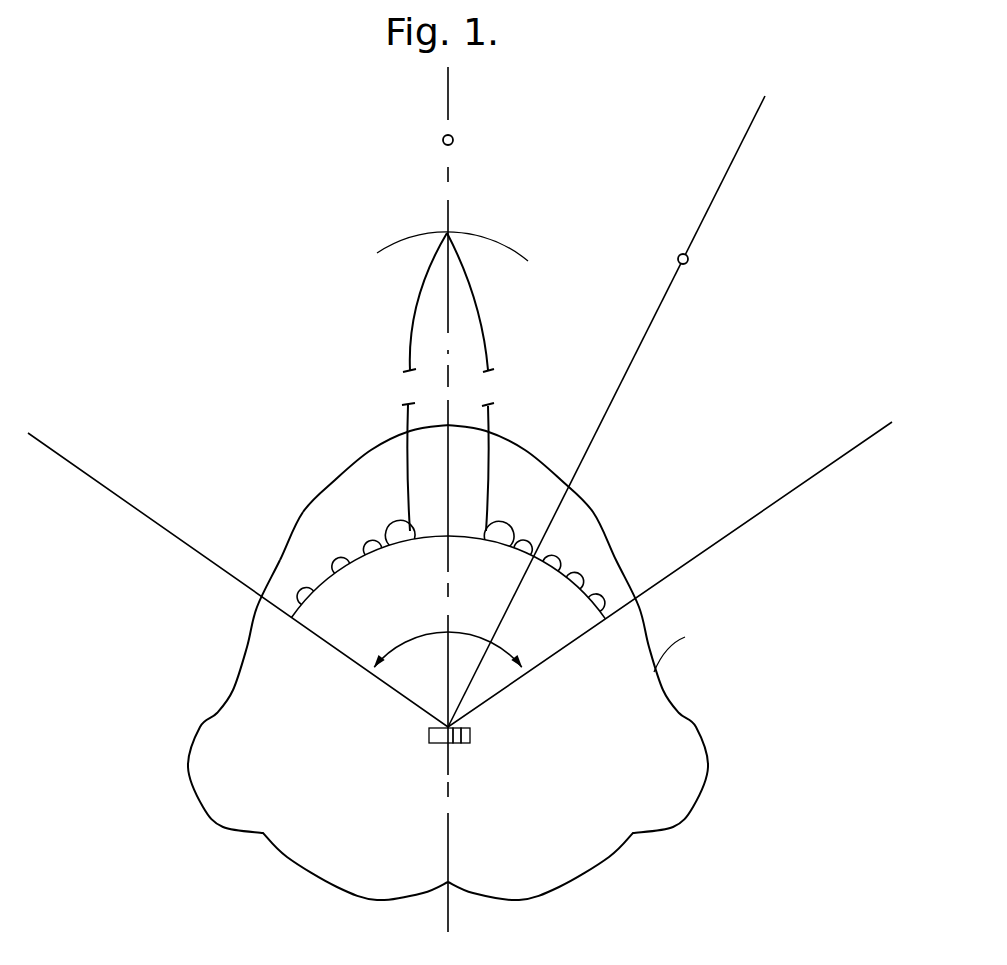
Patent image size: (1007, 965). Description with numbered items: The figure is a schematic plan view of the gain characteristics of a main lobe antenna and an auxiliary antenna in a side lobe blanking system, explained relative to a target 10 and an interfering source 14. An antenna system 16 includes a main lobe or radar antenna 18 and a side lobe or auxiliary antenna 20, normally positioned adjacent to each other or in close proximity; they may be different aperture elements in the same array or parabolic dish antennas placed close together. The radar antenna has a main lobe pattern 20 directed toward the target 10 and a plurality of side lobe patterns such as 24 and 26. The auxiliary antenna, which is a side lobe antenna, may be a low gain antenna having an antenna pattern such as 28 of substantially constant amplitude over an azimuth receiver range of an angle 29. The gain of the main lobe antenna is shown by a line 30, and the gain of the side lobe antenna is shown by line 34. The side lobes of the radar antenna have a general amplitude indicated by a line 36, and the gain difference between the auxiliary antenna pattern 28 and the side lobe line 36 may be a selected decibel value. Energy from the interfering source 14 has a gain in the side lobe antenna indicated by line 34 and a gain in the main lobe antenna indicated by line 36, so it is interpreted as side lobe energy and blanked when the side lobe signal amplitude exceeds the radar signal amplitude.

The target 10 is at (453, 140).
The interfering source 14 is at (688, 258).
The antenna system 16 is at (455, 744).
The main lobe or radar antenna 18 is at (428, 736).
The side lobe or auxiliary antenna 20 is at (485, 347).
The side lobe pattern 24 is at (500, 524).
The side lobe pattern 26 is at (395, 524).
The antenna pattern 28 is at (297, 526).
The angle 29 is at (420, 632).
The gain of the main lobe antenna 30 is at (378, 256).
The gain of the side lobe antenna 34 is at (522, 448).
The side lobe amplitude 36 is at (547, 561).